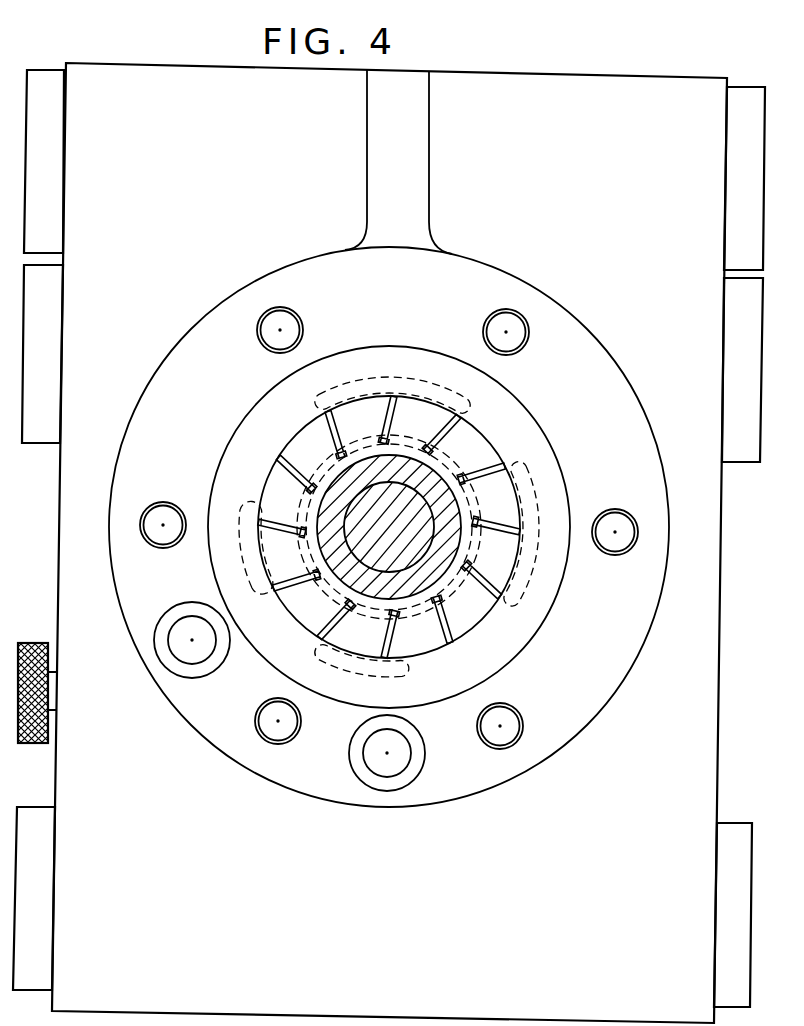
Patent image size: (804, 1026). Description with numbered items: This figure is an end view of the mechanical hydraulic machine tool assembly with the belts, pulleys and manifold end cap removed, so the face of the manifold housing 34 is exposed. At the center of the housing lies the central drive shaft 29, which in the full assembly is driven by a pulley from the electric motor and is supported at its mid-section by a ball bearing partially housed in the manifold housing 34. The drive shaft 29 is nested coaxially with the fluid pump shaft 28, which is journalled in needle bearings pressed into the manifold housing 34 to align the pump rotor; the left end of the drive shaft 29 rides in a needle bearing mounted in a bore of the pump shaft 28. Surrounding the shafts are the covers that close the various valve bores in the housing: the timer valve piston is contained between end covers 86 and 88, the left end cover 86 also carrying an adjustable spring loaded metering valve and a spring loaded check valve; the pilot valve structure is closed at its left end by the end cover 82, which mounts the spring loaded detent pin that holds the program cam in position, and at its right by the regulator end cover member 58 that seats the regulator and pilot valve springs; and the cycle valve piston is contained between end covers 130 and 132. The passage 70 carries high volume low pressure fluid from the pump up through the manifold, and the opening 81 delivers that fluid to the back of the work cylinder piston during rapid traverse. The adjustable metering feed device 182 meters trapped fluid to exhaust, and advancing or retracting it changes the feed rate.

The manifold housing 34 is at (652, 773).
The central drive shaft 29 is at (399, 540).
The fluid pump shaft 28 is at (447, 584).
The opening 81 is at (368, 378).
The passage 70 is at (240, 559).
The end cover 86 is at (56, 137).
The end cover 82 is at (51, 364).
The end cover 130 is at (46, 891).
The end cover 88 is at (756, 166).
The regulator end cover member 58 is at (755, 365).
The end cover 132 is at (748, 906).
The adjustable metering feed device 182 is at (40, 642).